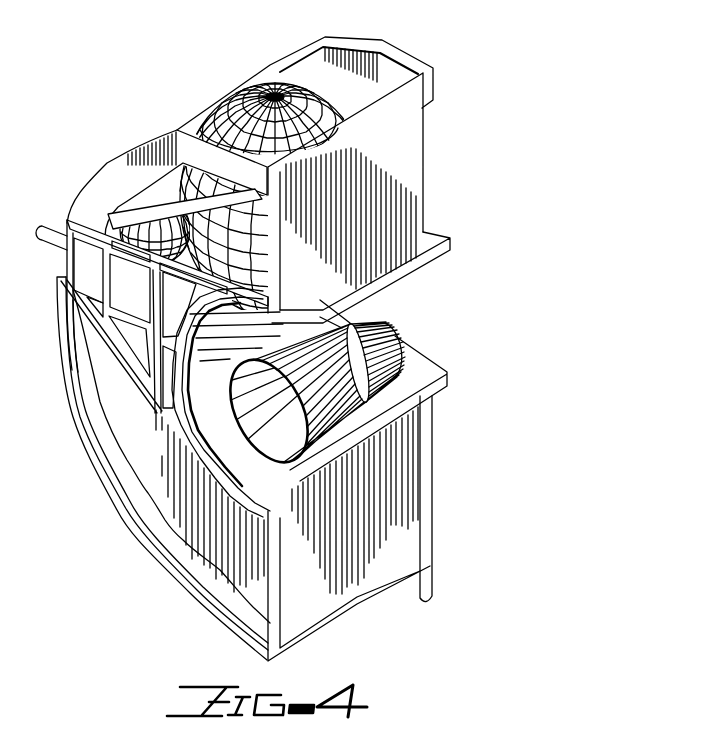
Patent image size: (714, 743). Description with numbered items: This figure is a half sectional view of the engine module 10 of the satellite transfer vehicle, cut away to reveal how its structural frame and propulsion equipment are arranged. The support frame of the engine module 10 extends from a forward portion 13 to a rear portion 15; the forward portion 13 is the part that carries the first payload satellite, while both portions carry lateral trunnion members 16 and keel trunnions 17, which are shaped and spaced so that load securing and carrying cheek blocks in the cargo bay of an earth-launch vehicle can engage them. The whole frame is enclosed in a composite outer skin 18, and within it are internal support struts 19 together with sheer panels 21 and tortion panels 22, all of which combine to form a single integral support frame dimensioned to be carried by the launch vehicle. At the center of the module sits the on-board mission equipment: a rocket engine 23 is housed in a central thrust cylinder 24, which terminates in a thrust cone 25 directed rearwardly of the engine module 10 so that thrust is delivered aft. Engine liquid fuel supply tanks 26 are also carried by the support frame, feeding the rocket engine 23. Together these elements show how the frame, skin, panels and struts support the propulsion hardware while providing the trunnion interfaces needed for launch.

The engine module 10 is at (470, 94).
The forward portion of the support frame 13 is at (428, 224).
The rear portion of the support frame 15 is at (170, 430).
The lateral trunnion members 16 is at (55, 222).
The keel trunnions 17 is at (432, 590).
The composite outer skin 18 is at (202, 614).
The internal support struts 19 is at (163, 190).
The sheer panels 21 is at (358, 558).
The tortion panels 22 is at (256, 556).
The rocket engine 23 is at (417, 328).
The central thrust cylinder 24 is at (432, 360).
The thrust cone 25 is at (294, 476).
The engine liquid fuel supply tanks 26 is at (228, 100).